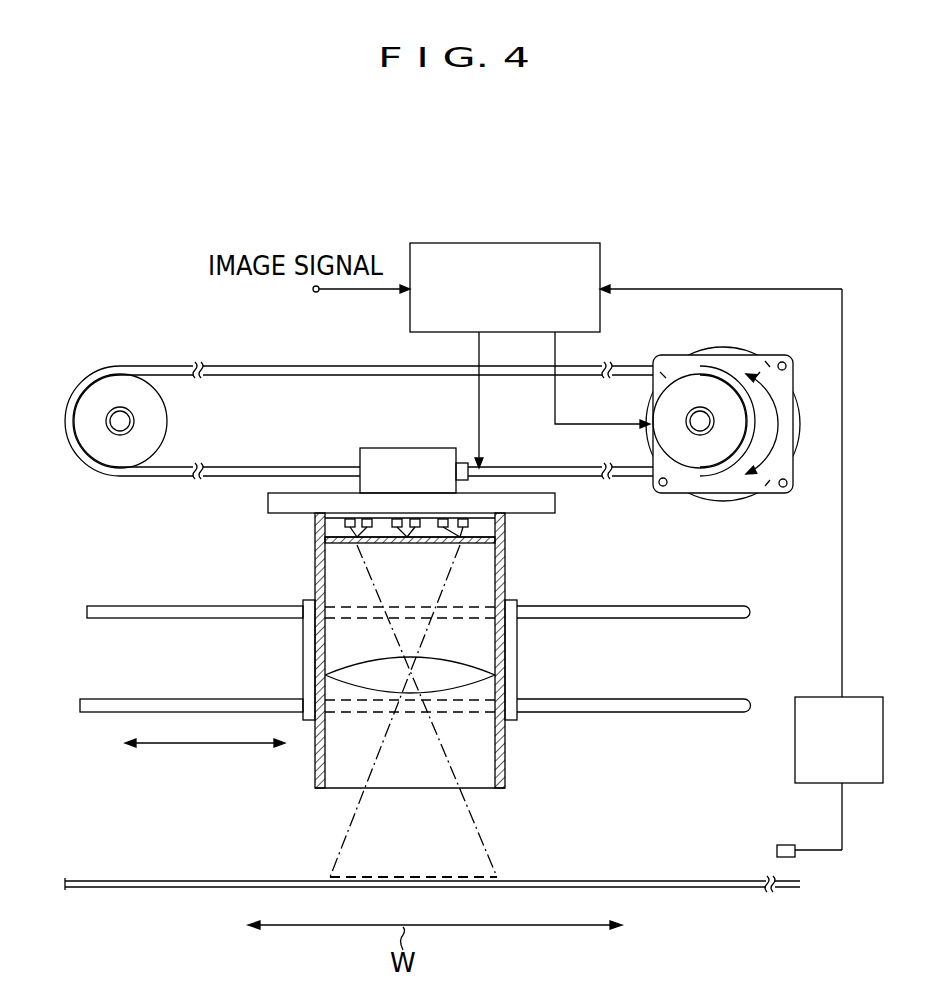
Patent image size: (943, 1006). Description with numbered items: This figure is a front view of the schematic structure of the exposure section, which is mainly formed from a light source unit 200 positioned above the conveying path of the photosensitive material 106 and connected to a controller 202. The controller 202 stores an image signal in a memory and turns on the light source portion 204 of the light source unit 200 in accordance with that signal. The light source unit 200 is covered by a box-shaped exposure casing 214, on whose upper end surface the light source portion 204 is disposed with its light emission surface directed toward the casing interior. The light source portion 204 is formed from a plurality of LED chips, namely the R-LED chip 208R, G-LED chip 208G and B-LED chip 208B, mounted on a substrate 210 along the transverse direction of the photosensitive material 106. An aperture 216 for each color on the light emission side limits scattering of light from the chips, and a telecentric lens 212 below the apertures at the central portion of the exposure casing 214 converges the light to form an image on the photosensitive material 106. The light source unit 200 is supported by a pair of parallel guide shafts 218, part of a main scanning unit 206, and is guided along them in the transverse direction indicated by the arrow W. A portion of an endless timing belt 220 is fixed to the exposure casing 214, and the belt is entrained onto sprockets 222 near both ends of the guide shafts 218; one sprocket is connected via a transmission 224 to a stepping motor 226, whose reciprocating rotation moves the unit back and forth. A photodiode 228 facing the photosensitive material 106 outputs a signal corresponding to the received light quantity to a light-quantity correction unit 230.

The photosensitive material 106 is at (680, 879).
The light source unit 200 is at (530, 565).
The controller 202 is at (600, 268).
The light source portion 204 is at (316, 539).
The main scanning unit 206 is at (147, 488).
The R-LED chip 208R is at (348, 528).
The G-LED chip 208G is at (407, 545).
The B-LED chip 208B is at (462, 528).
The substrate 210 is at (505, 528).
The telecentric lens 212 is at (365, 680).
The exposure casing 214 is at (507, 750).
The aperture 216 is at (326, 535).
The guide shafts 218 is at (650, 698).
The timing belt 220 is at (296, 467).
The sprockets 222 is at (158, 418).
The transmission 224 is at (748, 497).
The stepping motor 226 is at (718, 497).
The photodiode 228 is at (797, 852).
The light-quantity correction unit 230 is at (822, 783).